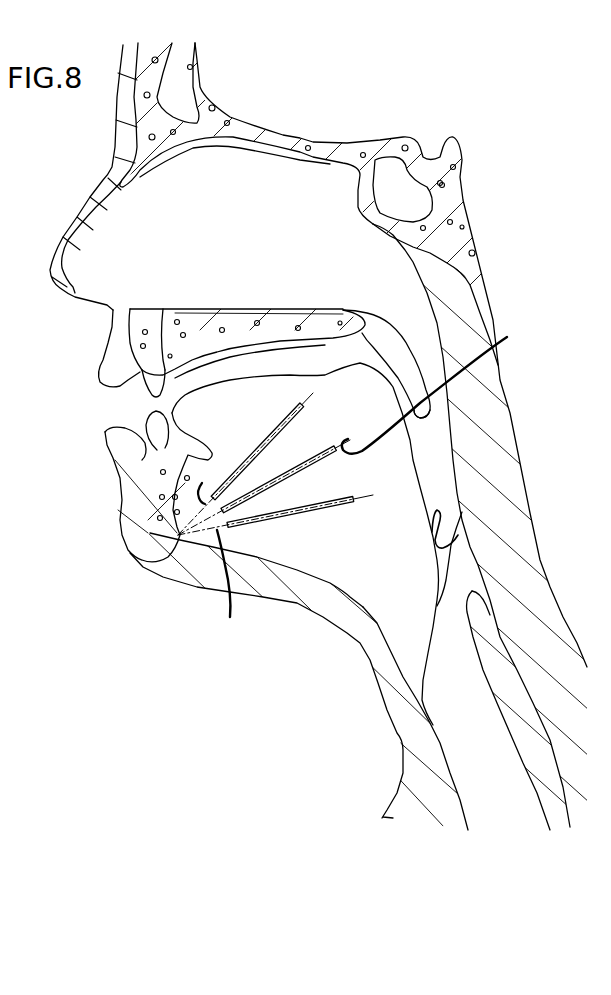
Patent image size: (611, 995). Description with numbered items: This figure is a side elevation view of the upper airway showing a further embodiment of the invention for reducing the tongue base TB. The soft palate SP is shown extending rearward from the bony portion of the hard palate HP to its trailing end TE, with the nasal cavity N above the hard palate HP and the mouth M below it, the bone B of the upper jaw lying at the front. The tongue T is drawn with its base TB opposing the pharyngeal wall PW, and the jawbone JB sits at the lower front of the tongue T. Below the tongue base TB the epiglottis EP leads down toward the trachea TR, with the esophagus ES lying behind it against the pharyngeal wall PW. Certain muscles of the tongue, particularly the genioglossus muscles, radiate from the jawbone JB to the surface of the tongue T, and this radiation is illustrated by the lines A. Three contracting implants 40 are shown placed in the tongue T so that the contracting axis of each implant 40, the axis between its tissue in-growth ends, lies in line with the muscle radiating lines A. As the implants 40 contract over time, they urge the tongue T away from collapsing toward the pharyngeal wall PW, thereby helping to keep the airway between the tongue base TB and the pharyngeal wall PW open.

The contracting implant 40 is at (265, 442).
The muscle radiating lines A is at (361, 482).
The nasal cavity N is at (254, 207).
The hard palate HP is at (212, 308).
The maxillary bone B is at (155, 317).
The soft palate SP is at (398, 344).
The mouth M is at (295, 369).
The trailing end TE is at (422, 416).
The pharyngeal wall PW is at (458, 468).
The tongue T is at (305, 544).
The epiglottis EP is at (462, 512).
The jawbone JB is at (150, 520).
The tongue base TB is at (432, 532).
The esophagus ES is at (522, 667).
The trachea TR is at (472, 725).